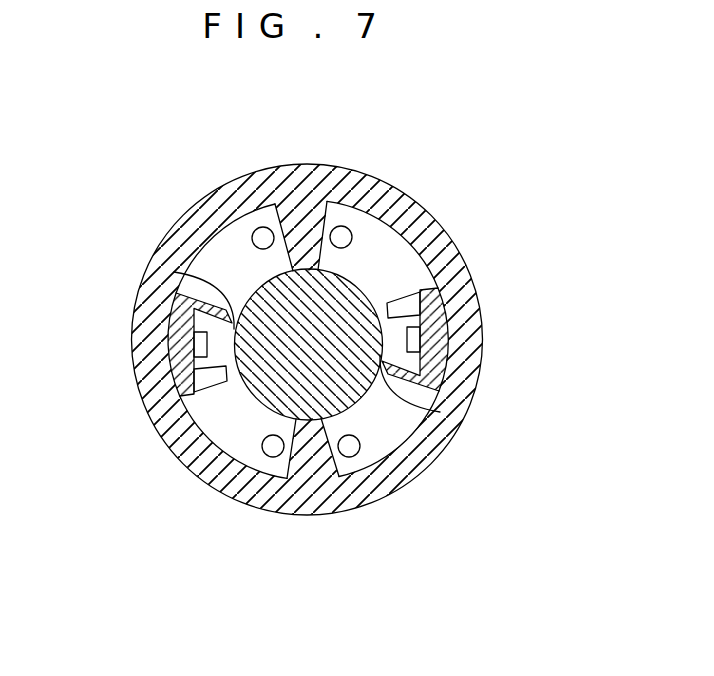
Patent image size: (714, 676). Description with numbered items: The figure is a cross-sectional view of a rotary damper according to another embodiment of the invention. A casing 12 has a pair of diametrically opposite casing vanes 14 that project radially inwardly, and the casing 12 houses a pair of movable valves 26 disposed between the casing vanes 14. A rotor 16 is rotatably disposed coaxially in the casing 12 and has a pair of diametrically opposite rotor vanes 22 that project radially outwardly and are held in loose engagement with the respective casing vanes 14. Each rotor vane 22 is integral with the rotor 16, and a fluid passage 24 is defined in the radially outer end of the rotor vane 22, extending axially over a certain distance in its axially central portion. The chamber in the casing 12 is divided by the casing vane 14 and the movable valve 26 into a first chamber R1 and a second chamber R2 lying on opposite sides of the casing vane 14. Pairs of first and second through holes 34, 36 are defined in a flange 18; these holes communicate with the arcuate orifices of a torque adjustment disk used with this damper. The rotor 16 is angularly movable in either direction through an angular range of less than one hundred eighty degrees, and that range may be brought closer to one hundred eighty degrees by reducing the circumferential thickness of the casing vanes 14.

The casing 12 is at (148, 413).
The casing vane 14 is at (313, 200).
The rotor 16 is at (255, 404).
The flange 18 is at (410, 278).
The rotor vane 22 is at (440, 413).
The fluid passage 24 is at (414, 341).
The movable valve 26 is at (430, 298).
The first through hole 34 is at (263, 238).
The second through hole 36 is at (341, 237).
The first chamber R1 is at (220, 257).
The second chamber R2 is at (397, 257).